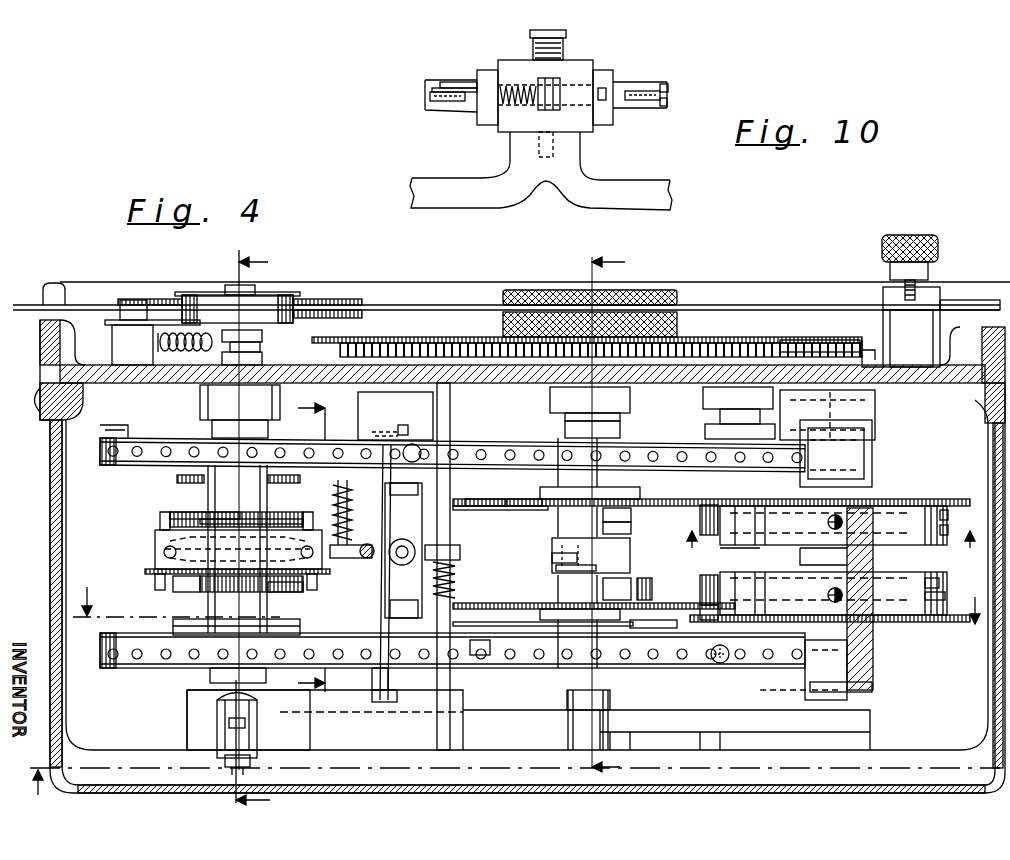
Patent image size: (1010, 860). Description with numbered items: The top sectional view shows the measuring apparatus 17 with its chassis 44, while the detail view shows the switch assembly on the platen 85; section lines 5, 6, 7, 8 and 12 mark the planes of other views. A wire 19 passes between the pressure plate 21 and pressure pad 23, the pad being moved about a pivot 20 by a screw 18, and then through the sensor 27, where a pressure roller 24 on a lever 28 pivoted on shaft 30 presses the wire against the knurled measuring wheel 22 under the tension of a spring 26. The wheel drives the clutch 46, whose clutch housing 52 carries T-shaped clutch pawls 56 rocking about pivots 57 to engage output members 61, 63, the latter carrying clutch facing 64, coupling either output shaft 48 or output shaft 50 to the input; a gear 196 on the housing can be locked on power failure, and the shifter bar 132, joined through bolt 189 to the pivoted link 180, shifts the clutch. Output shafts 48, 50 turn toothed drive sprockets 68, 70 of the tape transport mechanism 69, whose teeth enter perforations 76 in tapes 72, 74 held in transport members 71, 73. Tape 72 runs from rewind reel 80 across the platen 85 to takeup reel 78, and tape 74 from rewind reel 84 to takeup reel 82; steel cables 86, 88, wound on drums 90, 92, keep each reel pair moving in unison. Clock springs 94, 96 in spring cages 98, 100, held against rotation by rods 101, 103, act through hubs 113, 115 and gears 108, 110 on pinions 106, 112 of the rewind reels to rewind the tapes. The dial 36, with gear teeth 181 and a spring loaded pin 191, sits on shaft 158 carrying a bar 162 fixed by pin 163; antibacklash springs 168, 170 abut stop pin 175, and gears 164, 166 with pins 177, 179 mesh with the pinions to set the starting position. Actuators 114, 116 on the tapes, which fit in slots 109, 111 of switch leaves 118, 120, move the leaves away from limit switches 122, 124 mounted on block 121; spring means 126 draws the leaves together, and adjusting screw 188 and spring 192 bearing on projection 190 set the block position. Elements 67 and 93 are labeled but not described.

In FIG. 4, the section line 5- 5 is at (261, 529).
In FIG. 4, the section line 6- 6 is at (515, 793).
In FIG. 4, the section line 7- 7 is at (532, 596).
In FIG. 4, the section line 8- 8 is at (834, 552).
In FIG. 4, the section line 12- 12 is at (621, 517).
In FIG. 4, the measuring apparatus 17 is at (58, 282).
In FIG. 4, the screw 18 is at (918, 282).
In FIG. 4, the wire 19 is at (82, 303).
In FIG. 4, the pivot 20 is at (301, 540).
In FIG. 4, the pressure plate 21 is at (945, 312).
In FIG. 4, the knurled measuring wheel 22 is at (338, 299).
In FIG. 4, the pressure pad 23 is at (887, 300).
In FIG. 4, the pressure roller 24 is at (282, 310).
In FIG. 4, the spring 26 is at (180, 352).
In FIG. 4, the sensor 27 is at (276, 292).
In FIG. 4, the lever 28 is at (135, 328).
In FIG. 4, the shaft 30 is at (125, 300).
In FIG. 4, the dial 36 is at (740, 340).
In FIG. 4, the chassis 44 is at (862, 600).
In FIG. 4, the clutch 46 is at (140, 570).
In FIG. 4, the output shaft 48 is at (267, 490).
In FIG. 4, the output shaft 50 is at (265, 604).
In FIG. 4, the clutch housing 52 is at (155, 538).
In FIG. 4, the clutch pawls 56 is at (160, 518).
In FIG. 4, the pivots 57 is at (163, 552).
In FIG. 4, the output member 61 is at (183, 512).
In FIG. 4, the output member 63 is at (205, 592).
In FIG. 4, the clutch facing 64 is at (182, 592).
In FIG. 4, the plate 67 is at (203, 519).
In FIG. 4, the toothed drive sprocket 68 is at (262, 436).
In FIG. 4, the tape transport mechanism 69 is at (108, 472).
In FIG. 4, the drive sprocket 70 is at (208, 672).
In FIG. 4, the transport member 71 is at (524, 489).
In FIG. 10, the tape 72 is at (428, 95).
In FIG. 4, the tape 72 is at (485, 489).
In FIG. 4, the transport member 73 is at (455, 627).
In FIG. 10, the tape 74 is at (662, 97).
In FIG. 4, the tape 74 is at (492, 660).
In FIG. 4, the perforations 76 is at (550, 445).
In FIG. 4, the takeup reel 78 is at (114, 430).
In FIG. 4, the rewind reel 80 is at (728, 413).
In FIG. 4, the takeup reel 82 is at (150, 670).
In FIG. 4, the rewind reel 84 is at (812, 690).
In FIG. 10, the platen 85 is at (652, 192).
In FIG. 4, the platen 85 is at (379, 586).
In FIG. 4, the steel cable 86 is at (540, 610).
In FIG. 4, the steel cable 88 is at (540, 499).
In FIG. 4, the drum 90 is at (173, 626).
In FIG. 4, the drum 92 is at (708, 606).
In FIG. 4, the flange 93 is at (177, 478).
In FIG. 4, the clock spring 94 is at (948, 512).
In FIG. 4, the clock spring 96 is at (940, 582).
In FIG. 4, the spring cage 98 is at (948, 527).
In FIG. 4, the spring cage 100 is at (942, 594).
In FIG. 4, the rod 101 is at (826, 522).
In FIG. 4, the rod 103 is at (826, 595).
In FIG. 4, the pinion 106 is at (703, 516).
In FIG. 4, the gear 108 is at (955, 499).
In FIG. 10, the slot 109 is at (432, 88).
In FIG. 4, the slot 109 is at (389, 441).
In FIG. 4, the gear 110 is at (935, 622).
In FIG. 10, the slot 111 is at (668, 84).
In FIG. 4, the slot 111 is at (398, 679).
In FIG. 4, the pinion 112 is at (677, 584).
In FIG. 4, the hub 113 is at (875, 476).
In FIG. 4, the actuator 114 is at (415, 438).
In FIG. 4, the hub 115 is at (873, 650).
In FIG. 4, the actuator 116 is at (722, 663).
In FIG. 10, the switch leaf 118 is at (442, 82).
In FIG. 4, the switch leaf 118 is at (386, 420).
In FIG. 10, the switch leaf 120 is at (668, 98).
In FIG. 4, the switch leaf 120 is at (392, 700).
In FIG. 4, the block 121 is at (403, 550).
In FIG. 10, the limit switch 122 is at (480, 72).
In FIG. 4, the limit switch 122 is at (404, 500).
In FIG. 10, the limit switch 124 is at (605, 72).
In FIG. 4, the limit switch 124 is at (404, 603).
In FIG. 10, the spring means 126 is at (517, 85).
In FIG. 4, the spring means 126 is at (352, 500).
In FIG. 4, the shifter bar 132 is at (255, 758).
In FIG. 4, the shaft 158 is at (618, 420).
In FIG. 4, the bar 162 is at (630, 555).
In FIG. 4, the pin 163 is at (552, 558).
In FIG. 4, the gear 164 is at (500, 511).
In FIG. 4, the gear 166 is at (594, 597).
In FIG. 4, the antibacklash spring 168 is at (637, 525).
In FIG. 4, the antibacklash spring 170 is at (651, 632).
In FIG. 4, the stop pin 175 is at (556, 571).
In FIG. 4, the pin 177 is at (633, 512).
In FIG. 4, the pin 179 is at (637, 581).
In FIG. 4, the pivoted link 180 is at (257, 712).
In FIG. 4, the gear teeth 181 is at (810, 340).
In FIG. 4, the adjusting screw 188 is at (450, 535).
In FIG. 4, the bolt 189 is at (245, 732).
In FIG. 4, the projection 190 is at (455, 556).
In FIG. 4, the spring loaded pin 191 is at (870, 345).
In FIG. 4, the spring 192 is at (455, 576).
In FIG. 4, the gear 196 is at (150, 580).